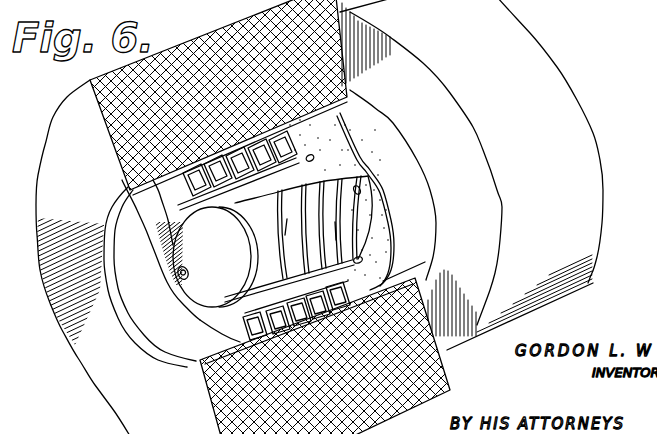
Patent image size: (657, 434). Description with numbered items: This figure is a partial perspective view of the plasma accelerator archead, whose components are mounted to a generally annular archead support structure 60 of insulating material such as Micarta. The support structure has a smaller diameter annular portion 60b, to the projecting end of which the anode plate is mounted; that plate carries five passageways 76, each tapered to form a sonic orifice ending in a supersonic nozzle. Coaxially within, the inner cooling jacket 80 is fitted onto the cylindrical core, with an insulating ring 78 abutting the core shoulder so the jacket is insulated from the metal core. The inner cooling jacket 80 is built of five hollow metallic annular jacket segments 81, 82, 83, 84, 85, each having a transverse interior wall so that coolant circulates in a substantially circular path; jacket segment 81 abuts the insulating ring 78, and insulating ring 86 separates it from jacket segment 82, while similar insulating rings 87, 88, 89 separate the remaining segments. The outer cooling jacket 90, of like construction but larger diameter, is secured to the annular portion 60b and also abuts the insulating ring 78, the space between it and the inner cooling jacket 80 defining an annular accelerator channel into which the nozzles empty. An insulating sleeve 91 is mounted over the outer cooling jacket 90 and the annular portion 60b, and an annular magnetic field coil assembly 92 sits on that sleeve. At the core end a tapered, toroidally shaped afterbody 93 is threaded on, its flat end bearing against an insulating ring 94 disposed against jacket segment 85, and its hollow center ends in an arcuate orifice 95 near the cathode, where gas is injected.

The archead support structure 60 is at (558, 101).
The smaller diameter annular portion 60b is at (424, 191).
The passageways 76 is at (315, 159).
The insulating ring 78 is at (362, 156).
The inner cooling jacket 80 is at (195, 228).
The jacket segment 81 is at (343, 239).
The jacket segment 82 is at (320, 245).
The jacket segment 83 is at (300, 255).
The jacket segment 84 is at (282, 265).
The jacket segment 85 is at (261, 275).
The insulating ring 86 is at (336, 222).
The insulating ring 87 is at (349, 247).
The insulating ring 88 is at (288, 219).
The insulating ring 89 is at (268, 222).
The outer cooling jacket 90 is at (222, 334).
The insulating sleeve 91 is at (119, 212).
The magnetic field coil assembly 92 is at (362, 388).
The afterbody 93 is at (172, 249).
The insulating ring 94 is at (252, 267).
The orifice 95 is at (182, 282).